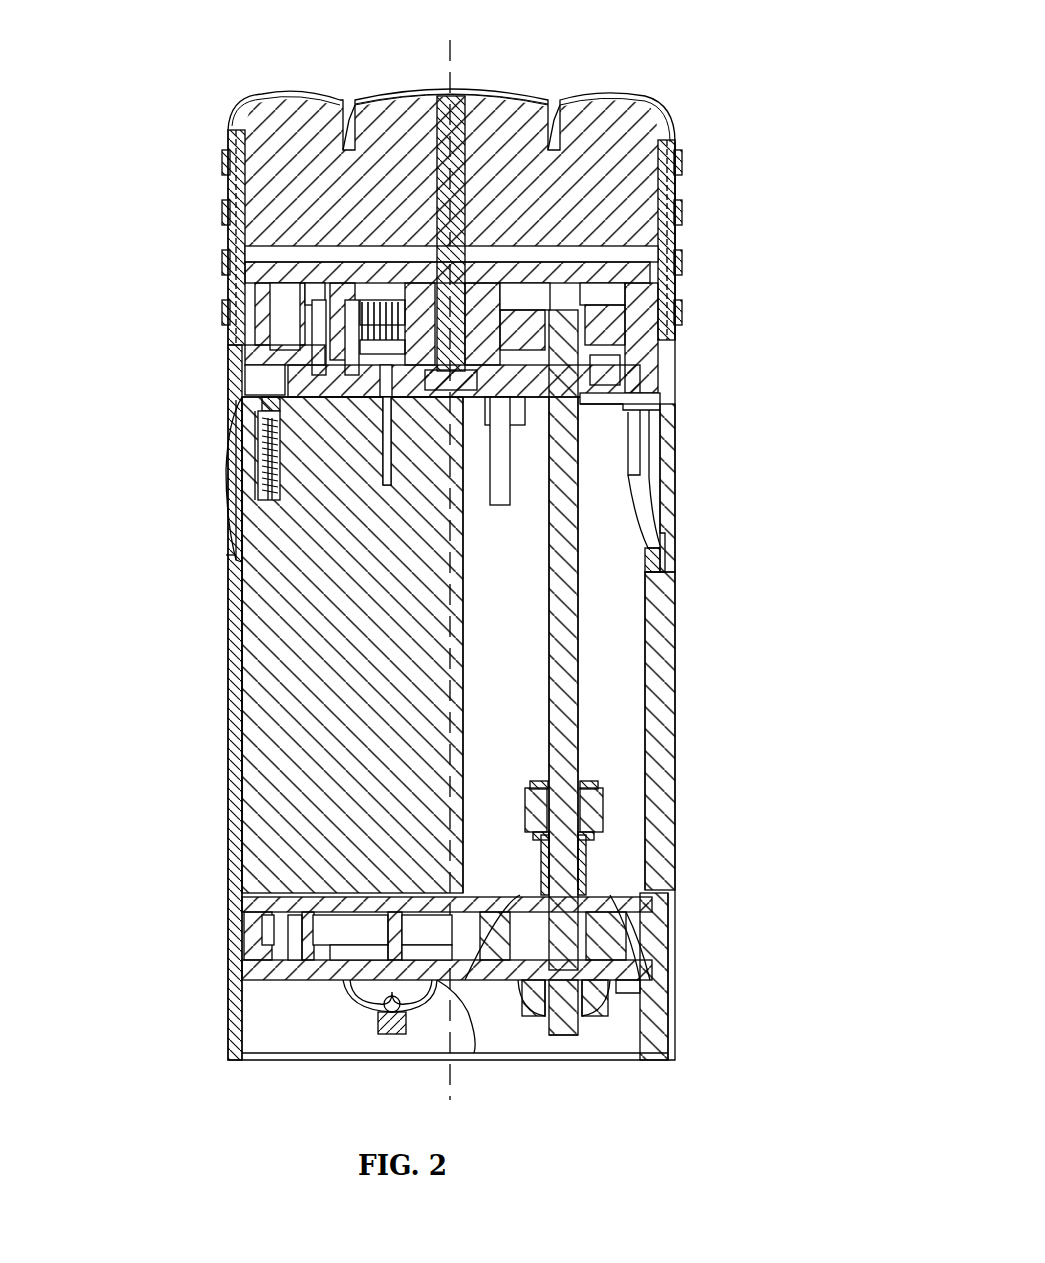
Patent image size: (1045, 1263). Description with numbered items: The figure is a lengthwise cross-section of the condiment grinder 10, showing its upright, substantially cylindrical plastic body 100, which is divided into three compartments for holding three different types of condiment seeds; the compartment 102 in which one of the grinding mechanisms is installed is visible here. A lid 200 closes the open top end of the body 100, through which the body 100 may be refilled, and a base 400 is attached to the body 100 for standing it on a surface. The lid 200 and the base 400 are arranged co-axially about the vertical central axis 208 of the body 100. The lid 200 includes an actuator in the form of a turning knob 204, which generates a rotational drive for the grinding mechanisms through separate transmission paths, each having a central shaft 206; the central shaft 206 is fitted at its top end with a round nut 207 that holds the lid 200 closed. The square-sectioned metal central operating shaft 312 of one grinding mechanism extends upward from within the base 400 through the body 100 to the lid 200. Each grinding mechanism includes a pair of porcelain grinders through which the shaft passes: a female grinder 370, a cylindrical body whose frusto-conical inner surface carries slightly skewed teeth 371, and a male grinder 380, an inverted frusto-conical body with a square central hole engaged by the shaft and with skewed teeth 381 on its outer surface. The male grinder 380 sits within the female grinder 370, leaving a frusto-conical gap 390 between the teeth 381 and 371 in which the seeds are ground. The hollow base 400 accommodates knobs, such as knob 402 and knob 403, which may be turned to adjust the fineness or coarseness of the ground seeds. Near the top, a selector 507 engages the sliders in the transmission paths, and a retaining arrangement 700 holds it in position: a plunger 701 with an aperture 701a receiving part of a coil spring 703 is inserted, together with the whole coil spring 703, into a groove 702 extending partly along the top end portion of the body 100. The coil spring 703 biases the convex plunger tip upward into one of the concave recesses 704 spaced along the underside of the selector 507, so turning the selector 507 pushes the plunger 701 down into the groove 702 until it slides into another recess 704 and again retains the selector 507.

The condiment grinder 10 is at (648, 66).
The body 100 is at (658, 592).
The compartment 102 is at (628, 652).
The lid 200 is at (142, 95).
The turning knob 204 is at (678, 166).
The central shaft 206 is at (440, 207).
The round nut 207 is at (452, 84).
The central axis 208 is at (452, 1076).
The central operating shaft 312 is at (565, 738).
The female grinder 370 is at (628, 895).
The teeth 371 is at (660, 933).
The male grinder 380 is at (630, 1000).
The teeth 381 is at (660, 984).
The frusto-conical gap 390 is at (438, 1042).
The base 400 is at (632, 915).
The knob 402 is at (360, 1002).
The knob 403 is at (595, 994).
The selector 507 is at (664, 442).
The latch assembly 700 is at (110, 405).
The plunger 701 is at (252, 432).
The aperture 701a is at (258, 413).
The groove 702 is at (262, 470).
The coil spring 703 is at (262, 486).
The recesses 704 is at (262, 404).